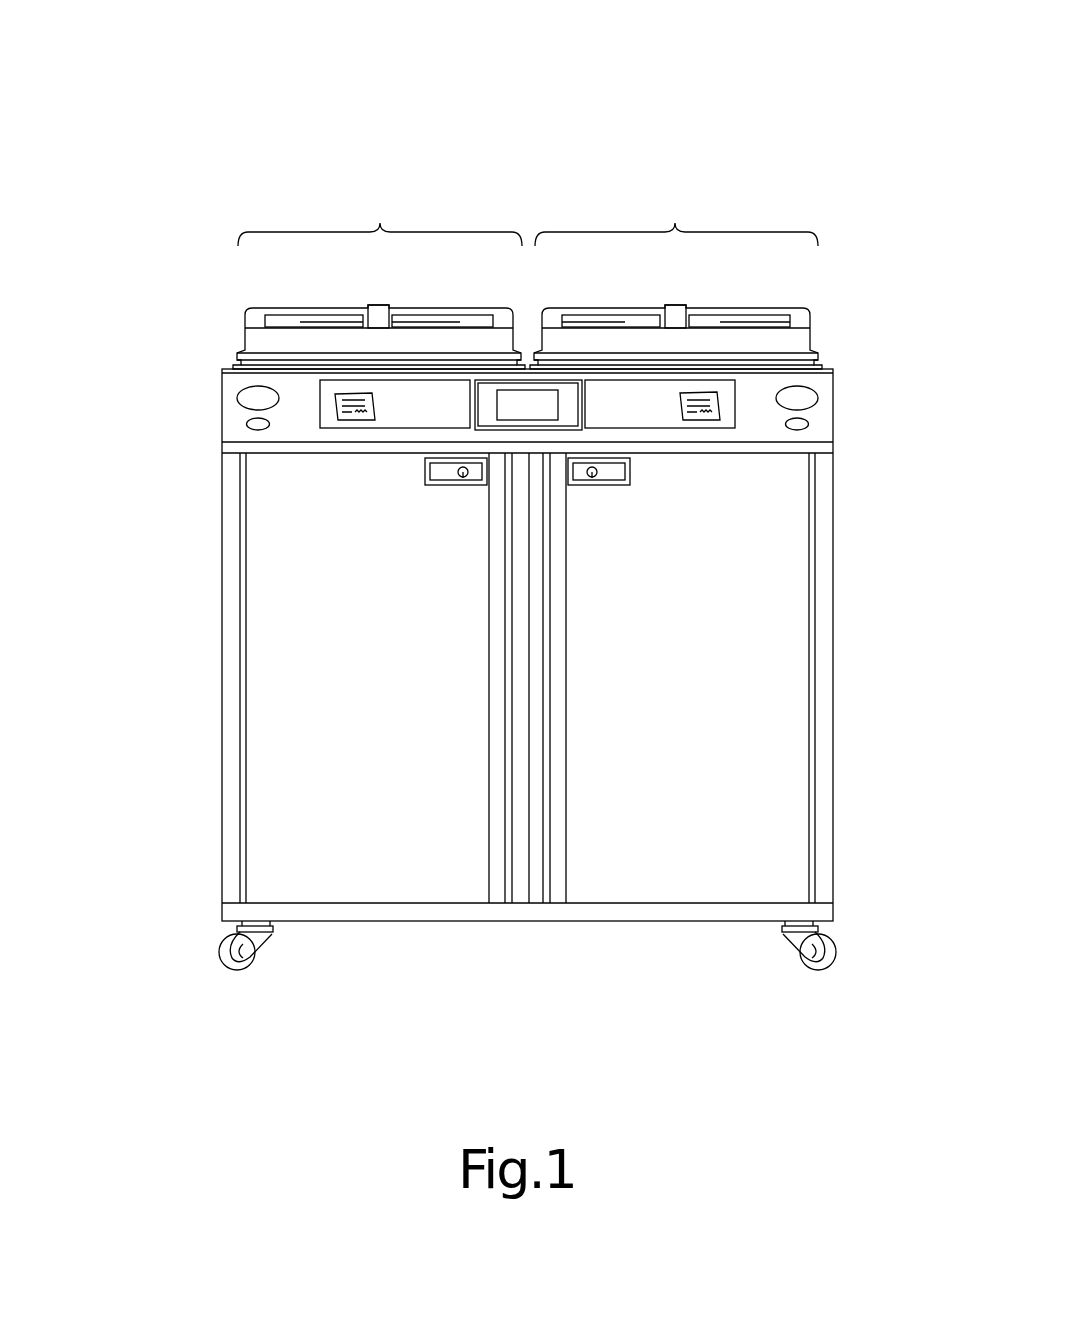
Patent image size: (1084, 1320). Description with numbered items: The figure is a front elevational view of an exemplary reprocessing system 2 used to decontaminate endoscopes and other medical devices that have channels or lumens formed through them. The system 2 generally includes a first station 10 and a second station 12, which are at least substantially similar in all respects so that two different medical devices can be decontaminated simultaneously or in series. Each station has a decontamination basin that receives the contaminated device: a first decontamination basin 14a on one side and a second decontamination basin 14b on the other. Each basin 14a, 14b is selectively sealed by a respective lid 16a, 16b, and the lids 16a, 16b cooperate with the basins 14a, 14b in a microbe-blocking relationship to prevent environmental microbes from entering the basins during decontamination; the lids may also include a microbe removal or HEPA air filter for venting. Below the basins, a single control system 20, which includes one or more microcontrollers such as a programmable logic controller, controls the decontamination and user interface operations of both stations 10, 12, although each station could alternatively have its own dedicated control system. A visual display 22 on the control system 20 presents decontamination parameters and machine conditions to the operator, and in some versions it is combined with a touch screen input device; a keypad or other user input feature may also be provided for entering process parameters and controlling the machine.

The reprocessing system 2 is at (172, 108).
The first station 10 is at (380, 223).
The second station 12 is at (675, 223).
The first decontamination basin 14a is at (293, 303).
The second decontamination basin 14b is at (782, 303).
The first lid 16a is at (380, 305).
The second lid 16b is at (682, 305).
The control system 20 is at (588, 405).
The visual display 22 is at (512, 406).